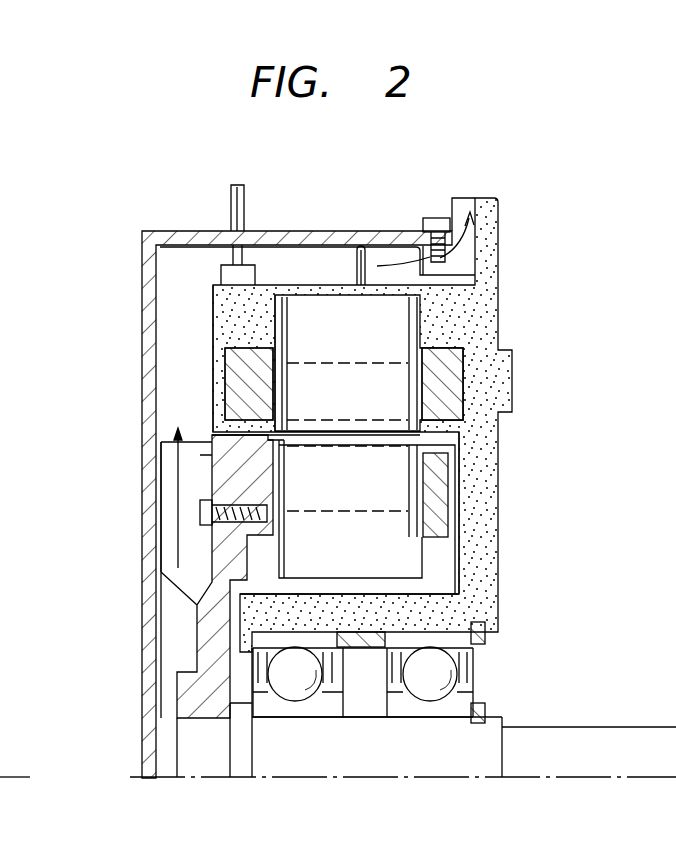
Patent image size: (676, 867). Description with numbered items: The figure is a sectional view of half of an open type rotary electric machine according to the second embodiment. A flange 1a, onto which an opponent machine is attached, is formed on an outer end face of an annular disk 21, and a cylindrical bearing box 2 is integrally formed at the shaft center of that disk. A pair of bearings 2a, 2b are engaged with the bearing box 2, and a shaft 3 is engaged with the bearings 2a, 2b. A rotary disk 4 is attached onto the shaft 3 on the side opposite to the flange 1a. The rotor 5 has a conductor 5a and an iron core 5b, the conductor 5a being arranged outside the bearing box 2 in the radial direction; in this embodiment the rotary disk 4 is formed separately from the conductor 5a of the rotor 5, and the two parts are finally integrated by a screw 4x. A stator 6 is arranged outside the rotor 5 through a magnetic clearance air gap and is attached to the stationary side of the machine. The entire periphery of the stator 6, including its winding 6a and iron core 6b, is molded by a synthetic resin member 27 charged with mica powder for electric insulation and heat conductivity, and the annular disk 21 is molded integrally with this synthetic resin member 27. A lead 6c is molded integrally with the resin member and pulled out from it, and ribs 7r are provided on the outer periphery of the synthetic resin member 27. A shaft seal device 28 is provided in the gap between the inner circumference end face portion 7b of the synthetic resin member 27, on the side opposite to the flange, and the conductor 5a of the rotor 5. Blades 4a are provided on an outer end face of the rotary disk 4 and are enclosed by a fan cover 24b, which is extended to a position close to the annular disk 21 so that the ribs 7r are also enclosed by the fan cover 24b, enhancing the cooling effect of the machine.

The flange 1a is at (470, 300).
The bearing box 2 is at (423, 600).
The bearing 2a is at (427, 687).
The bearing 2b is at (290, 697).
The shaft 3 is at (575, 745).
The rotary disk 4 is at (220, 542).
The blades 4a is at (163, 572).
The screw 4x is at (200, 514).
The rotor 5 is at (75, 422).
The conductor 5a is at (268, 496).
The iron core 5b is at (283, 522).
The stator 6 is at (572, 320).
The winding 6a is at (398, 395).
The iron core 6b is at (398, 340).
The lead 6c is at (232, 190).
The inner circumference end face portion 7b is at (224, 388).
The ribs 7r is at (305, 258).
The annular disk 21 is at (497, 468).
The fan cover 24b is at (140, 250).
The synthetic resin member 27 is at (210, 310).
The shaft seal device 28 is at (205, 425).